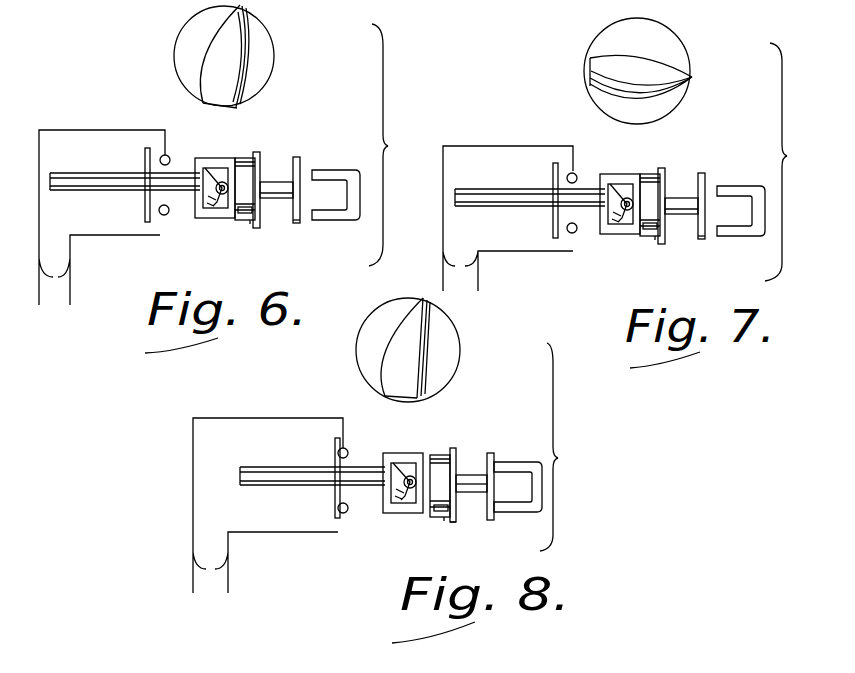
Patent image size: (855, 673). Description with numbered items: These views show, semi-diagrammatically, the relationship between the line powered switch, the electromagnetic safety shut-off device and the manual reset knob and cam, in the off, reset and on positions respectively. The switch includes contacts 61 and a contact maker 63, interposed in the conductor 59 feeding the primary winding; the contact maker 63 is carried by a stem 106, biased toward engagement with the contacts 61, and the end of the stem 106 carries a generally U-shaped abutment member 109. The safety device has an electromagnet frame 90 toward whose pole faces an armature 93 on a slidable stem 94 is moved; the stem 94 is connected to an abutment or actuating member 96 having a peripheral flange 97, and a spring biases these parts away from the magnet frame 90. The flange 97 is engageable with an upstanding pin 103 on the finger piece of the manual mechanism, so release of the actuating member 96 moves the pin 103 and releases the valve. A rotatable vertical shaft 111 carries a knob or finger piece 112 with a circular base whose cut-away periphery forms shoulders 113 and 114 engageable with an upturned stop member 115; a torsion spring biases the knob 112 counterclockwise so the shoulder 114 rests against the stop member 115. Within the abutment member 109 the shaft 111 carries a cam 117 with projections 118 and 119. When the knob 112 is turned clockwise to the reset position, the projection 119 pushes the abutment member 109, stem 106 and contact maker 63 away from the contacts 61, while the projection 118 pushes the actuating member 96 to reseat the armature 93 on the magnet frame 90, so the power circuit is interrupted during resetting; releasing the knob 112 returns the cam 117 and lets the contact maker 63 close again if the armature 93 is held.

In FIG. 6, the conductor 59 is at (102, 217).
In FIG. 7, the conductor 59 is at (508, 218).
In FIG. 8, the conductor 59 is at (268, 505).
In FIG. 6, the contacts 61 is at (167, 155).
In FIG. 7, the contacts 61 is at (577, 212).
In FIG. 8, the contacts 61 is at (357, 488).
In FIG. 6, the contact maker 63 is at (146, 165).
In FIG. 7, the contact maker 63 is at (536, 200).
In FIG. 8, the contact maker 63 is at (313, 478).
In FIG. 6, the electromagnet frame 90 is at (335, 220).
In FIG. 7, the electromagnet frame 90 is at (741, 226).
In FIG. 8, the electromagnet frame 90 is at (518, 505).
In FIG. 6, the armature 93 is at (301, 163).
In FIG. 7, the armature 93 is at (723, 194).
In FIG. 8, the armature 93 is at (509, 480).
In FIG. 6, the slidable stem 94 is at (279, 188).
In FIG. 7, the slidable stem 94 is at (684, 222).
In FIG. 8, the slidable stem 94 is at (478, 457).
In FIG. 6, the abutment or actuating member 96 is at (257, 152).
In FIG. 7, the abutment or actuating member 96 is at (683, 196).
In FIG. 8, the abutment or actuating member 96 is at (461, 472).
In FIG. 6, the flange 97 is at (297, 224).
In FIG. 7, the flange 97 is at (690, 202).
In FIG. 8, the flange 97 is at (465, 534).
In FIG. 6, the upstanding pin 103 is at (250, 224).
In FIG. 7, the upstanding pin 103 is at (687, 249).
In FIG. 8, the upstanding pin 103 is at (425, 539).
In FIG. 6, the stem 106 is at (125, 196).
In FIG. 7, the stem 106 is at (530, 212).
In FIG. 8, the stem 106 is at (312, 488).
In FIG. 6, the U-shaped abutment member 109 is at (213, 160).
In FIG. 7, the U-shaped abutment member 109 is at (626, 186).
In FIG. 8, the U-shaped abutment member 109 is at (403, 461).
In FIG. 6, the rotatable vertical shaft 111 is at (225, 210).
In FIG. 7, the rotatable vertical shaft 111 is at (644, 187).
In FIG. 8, the rotatable vertical shaft 111 is at (395, 514).
In FIG. 6, the knob or finger piece 112 is at (205, 32).
In FIG. 7, the knob or finger piece 112 is at (624, 69).
In FIG. 8, the knob or finger piece 112 is at (390, 350).
In FIG. 6, the shoulder 113 is at (268, 28).
In FIG. 7, the shoulder 113 is at (657, 92).
In FIG. 8, the shoulder 113 is at (445, 347).
In FIG. 6, the shoulder 114 is at (258, 108).
In FIG. 7, the shoulder 114 is at (629, 106).
In FIG. 8, the shoulder 114 is at (436, 361).
In FIG. 6, the stop member 115 is at (262, 104).
In FIG. 7, the stop member 115 is at (651, 112).
In FIG. 8, the stop member 115 is at (456, 351).
In FIG. 6, the cam 117 is at (216, 184).
In FIG. 7, the cam 117 is at (622, 237).
In FIG. 8, the cam 117 is at (379, 466).
In FIG. 6, the projection 118 is at (246, 170).
In FIG. 7, the projection 118 is at (659, 224).
In FIG. 8, the projection 118 is at (428, 473).
In FIG. 6, the projection 119 is at (214, 202).
In FIG. 7, the projection 119 is at (606, 220).
In FIG. 8, the projection 119 is at (381, 496).